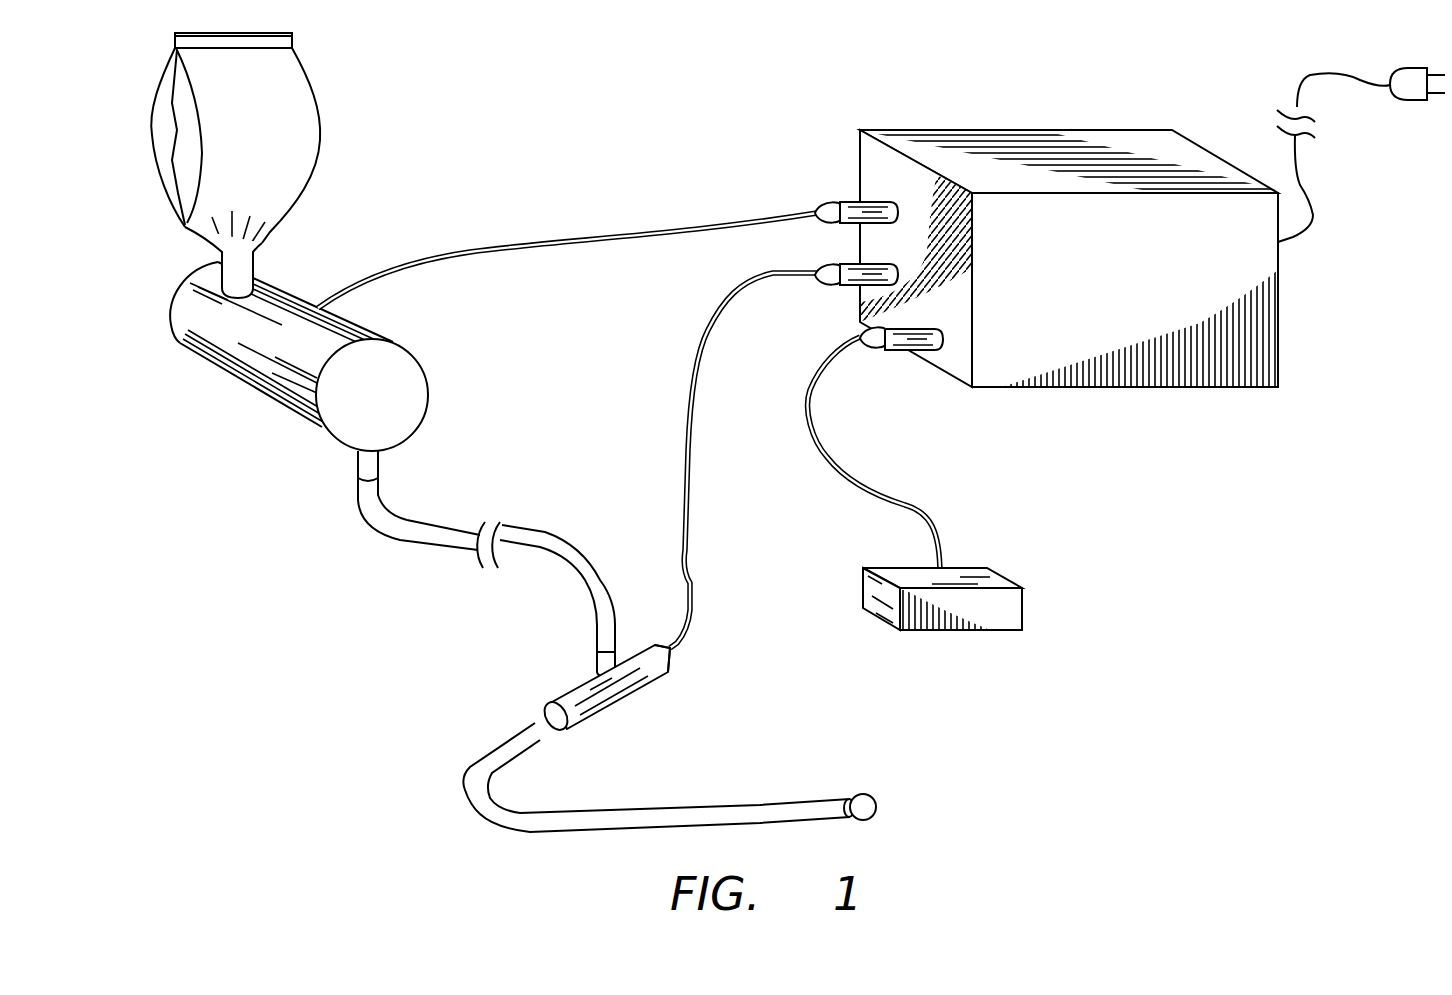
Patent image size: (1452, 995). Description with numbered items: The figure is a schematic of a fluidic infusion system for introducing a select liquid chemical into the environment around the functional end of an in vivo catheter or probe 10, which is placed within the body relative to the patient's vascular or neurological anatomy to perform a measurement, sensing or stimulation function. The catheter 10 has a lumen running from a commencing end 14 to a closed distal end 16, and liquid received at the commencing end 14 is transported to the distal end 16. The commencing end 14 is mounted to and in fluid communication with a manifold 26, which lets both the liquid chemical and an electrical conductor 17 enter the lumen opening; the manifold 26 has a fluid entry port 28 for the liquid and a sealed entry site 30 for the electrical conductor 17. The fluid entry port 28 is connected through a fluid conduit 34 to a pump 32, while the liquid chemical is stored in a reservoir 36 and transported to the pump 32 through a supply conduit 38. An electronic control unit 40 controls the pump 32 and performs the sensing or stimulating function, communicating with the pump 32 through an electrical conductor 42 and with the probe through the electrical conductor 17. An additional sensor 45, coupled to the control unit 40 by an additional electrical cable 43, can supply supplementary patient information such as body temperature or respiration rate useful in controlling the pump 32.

The catheter or probe 10 is at (770, 757).
The commencing end 14 is at (535, 720).
The distal end 16 is at (892, 808).
The electrical conductor 17 is at (693, 458).
The manifold 26 is at (600, 707).
The fluid entry port 28 is at (597, 655).
The sealed entry site 30 is at (667, 652).
The pump 32 is at (423, 412).
The fluid conduit 34 is at (423, 545).
The reservoir 36 is at (320, 153).
The supply conduit 38 is at (253, 255).
The electronic control unit 40 is at (1127, 387).
The electrical conductor 42 is at (618, 240).
The additional electrical cable 43 is at (893, 497).
The additional sensor 45 is at (1017, 618).